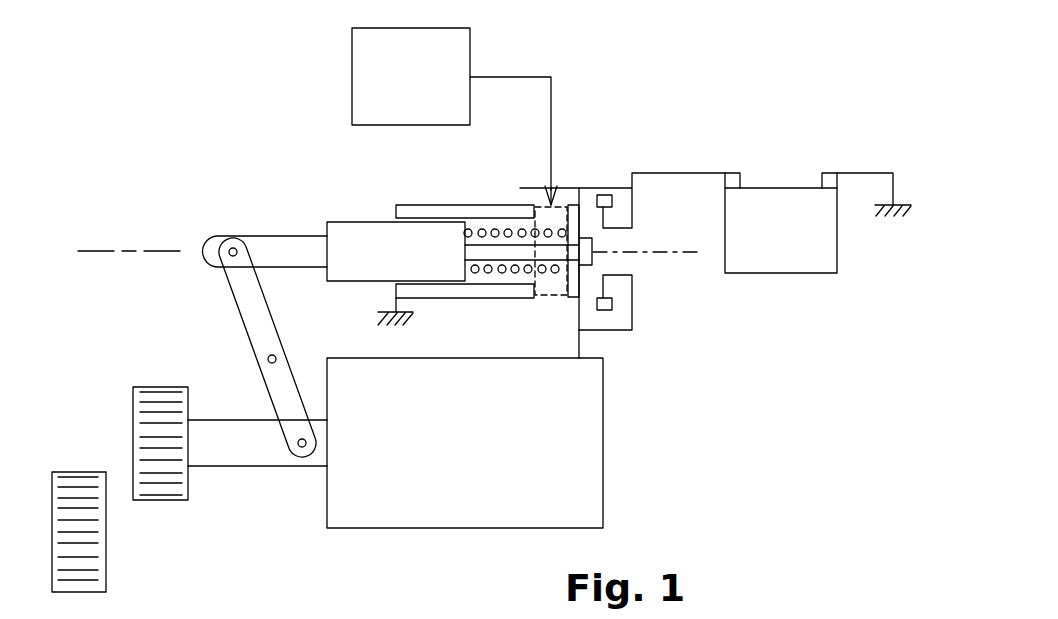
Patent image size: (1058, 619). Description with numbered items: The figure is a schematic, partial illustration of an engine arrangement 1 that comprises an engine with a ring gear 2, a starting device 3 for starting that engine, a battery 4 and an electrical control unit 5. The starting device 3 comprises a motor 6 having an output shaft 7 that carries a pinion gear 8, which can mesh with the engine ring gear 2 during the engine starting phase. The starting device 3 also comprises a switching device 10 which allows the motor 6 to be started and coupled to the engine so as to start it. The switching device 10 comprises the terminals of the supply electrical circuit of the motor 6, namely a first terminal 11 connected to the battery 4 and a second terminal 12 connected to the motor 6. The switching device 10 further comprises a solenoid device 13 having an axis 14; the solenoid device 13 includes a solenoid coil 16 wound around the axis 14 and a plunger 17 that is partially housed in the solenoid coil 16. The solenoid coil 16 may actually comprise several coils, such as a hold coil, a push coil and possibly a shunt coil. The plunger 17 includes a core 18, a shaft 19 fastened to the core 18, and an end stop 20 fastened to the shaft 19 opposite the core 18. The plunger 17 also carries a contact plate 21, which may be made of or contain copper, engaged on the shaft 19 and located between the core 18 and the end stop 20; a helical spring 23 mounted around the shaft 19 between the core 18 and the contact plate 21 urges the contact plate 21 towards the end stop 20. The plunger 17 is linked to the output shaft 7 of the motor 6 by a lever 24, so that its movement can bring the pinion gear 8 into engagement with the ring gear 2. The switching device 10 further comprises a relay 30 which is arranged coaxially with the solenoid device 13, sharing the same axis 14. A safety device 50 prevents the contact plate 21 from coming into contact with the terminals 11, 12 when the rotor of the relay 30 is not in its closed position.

The engine arrangement 1 is at (233, 74).
The ring gear 2 is at (87, 555).
The starting device 3 is at (101, 231).
The battery 4 is at (790, 244).
The electrical control unit 5 is at (418, 86).
The motor 6 is at (469, 452).
The output shaft 7 is at (235, 447).
The pinion gear 8 is at (162, 468).
The switching device 10 is at (309, 197).
The first terminal 11 is at (622, 220).
The second terminal 12 is at (623, 288).
The solenoid device 13 is at (377, 202).
The axis 14 is at (102, 253).
The solenoid coil 16 is at (428, 290).
The plunger 17 is at (361, 284).
The core 18 is at (396, 263).
The shaft 19 is at (204, 249).
The end stop 20 is at (594, 257).
The contact plate 21 is at (573, 293).
The helical spring 23 is at (481, 229).
The lever 24 is at (248, 312).
The relay 30 is at (570, 215).
The safety device 50 is at (605, 193).